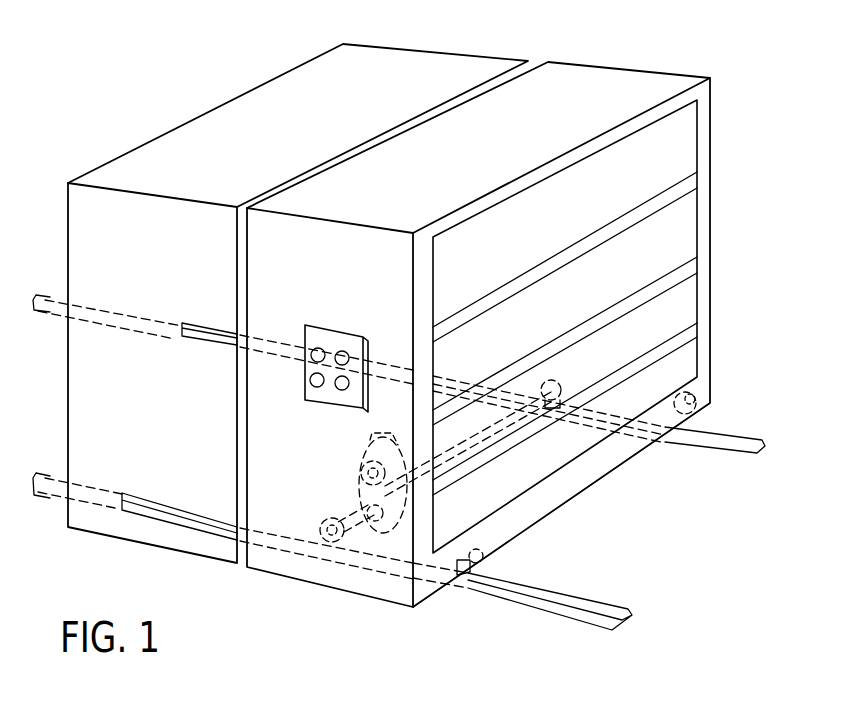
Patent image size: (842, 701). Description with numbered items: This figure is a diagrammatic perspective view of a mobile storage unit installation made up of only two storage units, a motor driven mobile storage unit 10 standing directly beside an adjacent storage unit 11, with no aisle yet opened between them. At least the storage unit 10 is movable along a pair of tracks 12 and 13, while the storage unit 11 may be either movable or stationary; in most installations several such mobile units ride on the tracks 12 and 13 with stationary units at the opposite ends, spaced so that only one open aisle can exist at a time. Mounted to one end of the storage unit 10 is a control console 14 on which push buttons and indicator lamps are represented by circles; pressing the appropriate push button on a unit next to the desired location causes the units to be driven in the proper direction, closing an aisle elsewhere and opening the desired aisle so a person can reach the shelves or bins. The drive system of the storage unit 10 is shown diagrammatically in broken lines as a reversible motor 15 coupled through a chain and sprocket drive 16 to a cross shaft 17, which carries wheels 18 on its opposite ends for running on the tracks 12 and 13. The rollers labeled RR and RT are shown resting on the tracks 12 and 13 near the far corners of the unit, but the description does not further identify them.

The mobile storage unit 10 is at (643, 57).
The storage unit 11 is at (449, 36).
The track 12 is at (538, 588).
The track 13 is at (718, 442).
The control console 14 is at (329, 405).
The reversible motor 15 is at (392, 440).
The chain and sprocket drive 16 is at (355, 498).
The cross shaft 17 is at (467, 470).
The wheels 18 is at (325, 543).
The rear roller RR is at (472, 580).
The front roller RT is at (700, 393).